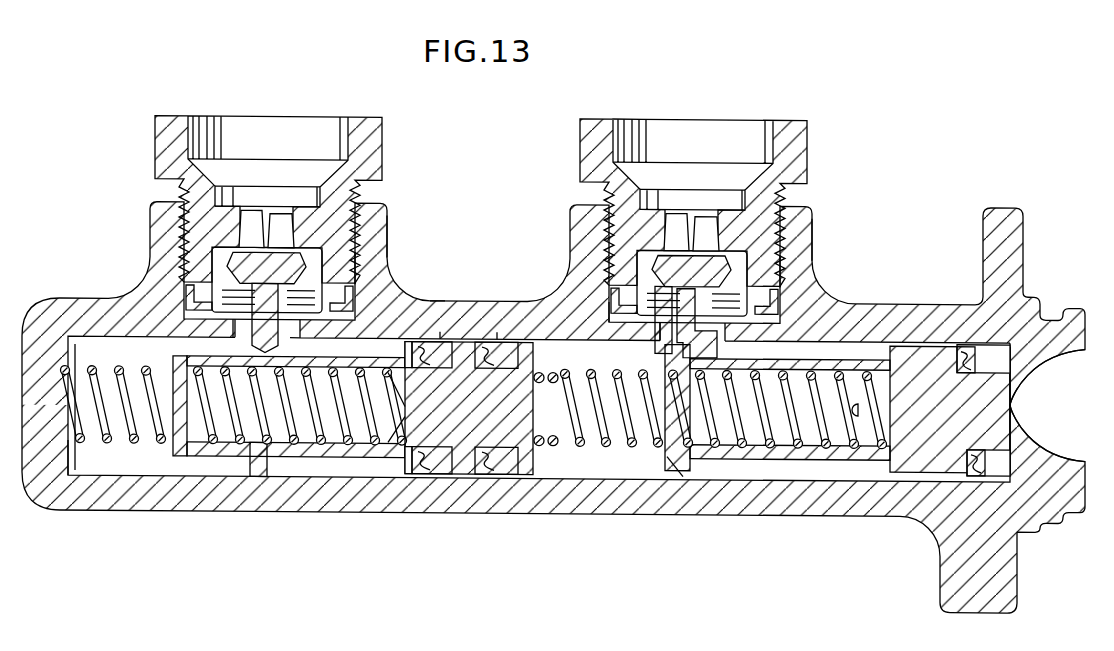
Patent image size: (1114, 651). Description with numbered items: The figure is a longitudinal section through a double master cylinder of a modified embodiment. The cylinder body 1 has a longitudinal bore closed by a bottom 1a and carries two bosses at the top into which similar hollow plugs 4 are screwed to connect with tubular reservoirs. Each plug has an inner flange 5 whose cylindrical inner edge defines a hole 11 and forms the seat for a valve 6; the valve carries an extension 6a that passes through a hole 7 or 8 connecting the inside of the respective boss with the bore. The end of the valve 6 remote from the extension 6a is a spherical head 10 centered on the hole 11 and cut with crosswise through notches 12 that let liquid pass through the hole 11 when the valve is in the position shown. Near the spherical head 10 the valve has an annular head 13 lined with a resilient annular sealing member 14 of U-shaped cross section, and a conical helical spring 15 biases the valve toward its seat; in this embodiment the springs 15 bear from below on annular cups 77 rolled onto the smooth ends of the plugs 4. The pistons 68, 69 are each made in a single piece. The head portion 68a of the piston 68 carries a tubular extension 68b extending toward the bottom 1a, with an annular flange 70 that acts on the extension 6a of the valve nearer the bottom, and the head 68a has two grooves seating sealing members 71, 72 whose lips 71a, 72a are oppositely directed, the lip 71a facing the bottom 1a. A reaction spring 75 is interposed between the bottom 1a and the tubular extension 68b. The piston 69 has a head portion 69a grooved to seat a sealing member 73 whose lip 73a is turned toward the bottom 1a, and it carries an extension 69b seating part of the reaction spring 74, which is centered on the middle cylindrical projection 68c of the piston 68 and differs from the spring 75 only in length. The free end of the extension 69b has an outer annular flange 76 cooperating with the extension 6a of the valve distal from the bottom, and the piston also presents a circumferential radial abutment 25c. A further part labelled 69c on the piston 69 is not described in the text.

The cylinder body portion 1 is at (427, 330).
The bottom portion 1a is at (65, 450).
The hollow plug 4 is at (167, 145).
The inner flange 5 is at (241, 205).
The valve 6 is at (233, 330).
The extension 6a is at (292, 340).
The hole 7 is at (250, 332).
The hole 8 is at (652, 327).
The spherical head 10 is at (370, 225).
The hole 11 is at (258, 205).
The through notches 12 is at (236, 234).
The annular head 13 is at (227, 270).
The annular sealing member 14 is at (370, 252).
The conical helical spring 15 is at (185, 292).
The circumferential radial abutment 25c is at (1047, 405).
The piston 68 is at (377, 468).
The head portion 68a is at (432, 428).
The tubular extension 68b is at (316, 450).
The middle cylindrical projection 68c is at (553, 450).
The piston 69 is at (903, 468).
The head portion 69a is at (973, 415).
The extension 69b is at (767, 452).
The secondary piston spring 69c is at (875, 456).
The annular flange 70 is at (258, 465).
The annular sealing member 71 is at (443, 464).
The lip 71a is at (440, 337).
The annular sealing member 72 is at (487, 462).
The lip 72a is at (497, 337).
The sealing member 73 is at (990, 466).
The lip 73a is at (980, 345).
The reaction spring 74 is at (548, 446).
The reaction spring 75 is at (388, 463).
The outer annular flange 76 is at (665, 465).
The annular cup 77 is at (416, 322).